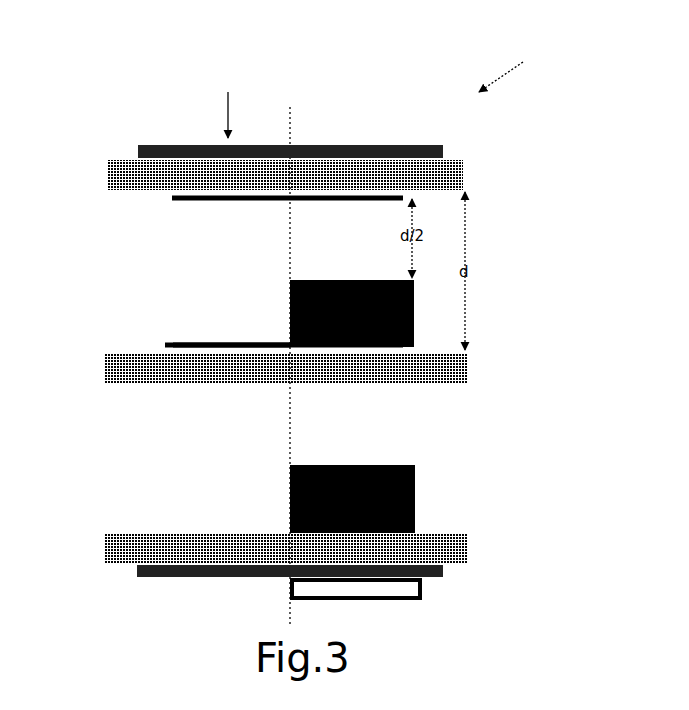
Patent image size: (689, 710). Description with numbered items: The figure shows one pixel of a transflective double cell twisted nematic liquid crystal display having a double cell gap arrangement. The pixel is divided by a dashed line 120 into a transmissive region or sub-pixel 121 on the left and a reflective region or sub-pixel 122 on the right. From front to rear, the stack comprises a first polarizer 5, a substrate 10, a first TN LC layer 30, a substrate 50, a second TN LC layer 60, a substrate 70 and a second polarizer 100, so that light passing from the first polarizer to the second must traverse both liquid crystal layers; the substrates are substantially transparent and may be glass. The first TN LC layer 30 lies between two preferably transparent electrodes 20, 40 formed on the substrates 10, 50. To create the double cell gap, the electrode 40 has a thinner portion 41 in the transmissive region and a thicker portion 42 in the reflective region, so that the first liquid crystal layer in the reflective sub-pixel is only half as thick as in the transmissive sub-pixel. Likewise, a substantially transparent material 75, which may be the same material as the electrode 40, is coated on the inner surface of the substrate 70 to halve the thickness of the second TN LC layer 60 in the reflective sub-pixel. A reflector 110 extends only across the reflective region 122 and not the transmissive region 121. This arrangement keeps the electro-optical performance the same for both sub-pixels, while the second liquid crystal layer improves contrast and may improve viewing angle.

The first polarizer 5 is at (407, 145).
The substrate 10 is at (463, 176).
The electrode 20 is at (170, 198).
The first TN LC layer 30 is at (223, 249).
The electrode 40 is at (166, 345).
The thinner portion 41 is at (212, 345).
The thicker portion 42 is at (414, 332).
The substrate 50 is at (468, 371).
The second TN LC layer 60 is at (223, 441).
The substrate 70 is at (452, 533).
The substantially transparent material 75 is at (390, 465).
The second polarizer 100 is at (443, 571).
The reflector 110 is at (425, 590).
The dashed line 120 is at (290, 107).
The transmissive region 121 is at (232, 99).
The reflective region 122 is at (517, 63).